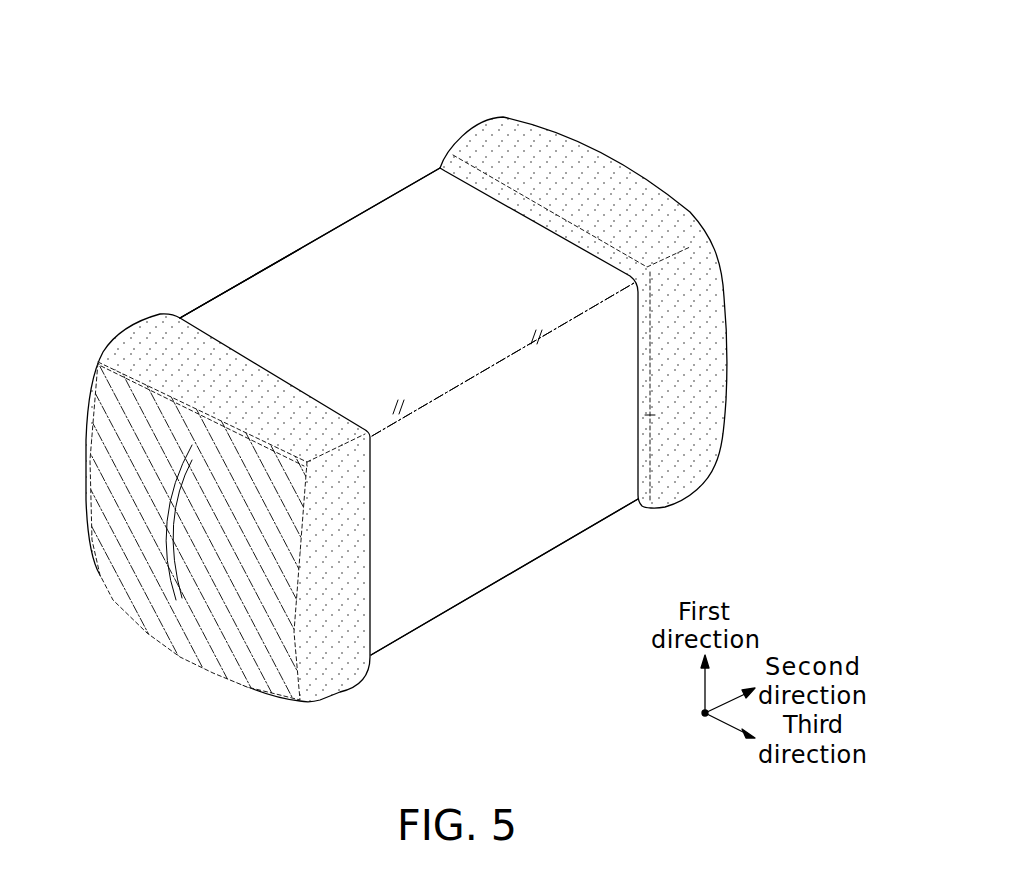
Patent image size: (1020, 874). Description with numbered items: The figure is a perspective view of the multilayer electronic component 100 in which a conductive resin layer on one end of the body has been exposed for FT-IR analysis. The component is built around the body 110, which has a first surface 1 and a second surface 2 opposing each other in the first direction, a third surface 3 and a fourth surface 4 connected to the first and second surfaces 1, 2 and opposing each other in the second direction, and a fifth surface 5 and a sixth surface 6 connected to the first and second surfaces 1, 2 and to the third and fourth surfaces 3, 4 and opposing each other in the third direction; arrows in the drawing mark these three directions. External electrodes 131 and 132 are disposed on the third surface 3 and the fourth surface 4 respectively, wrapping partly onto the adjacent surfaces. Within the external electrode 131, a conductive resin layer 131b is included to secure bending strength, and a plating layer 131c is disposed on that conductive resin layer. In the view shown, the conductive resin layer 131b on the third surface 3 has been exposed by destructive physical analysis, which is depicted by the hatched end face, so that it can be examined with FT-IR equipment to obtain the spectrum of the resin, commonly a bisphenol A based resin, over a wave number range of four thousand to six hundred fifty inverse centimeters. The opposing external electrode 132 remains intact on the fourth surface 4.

The multilayer electronic component 100 is at (276, 56).
The body 110 is at (363, 230).
The external electrode 131 is at (263, 491).
The conductive resin layer 131b is at (263, 511).
The plating layer 131c is at (294, 637).
The external electrode 132 is at (583, 284).
The first surface 1 is at (453, 586).
The second surface 2 is at (422, 210).
The third surface 3 is at (144, 584).
The fourth surface 4 is at (521, 228).
The fifth surface 5 is at (224, 308).
The sixth surface 6 is at (568, 510).